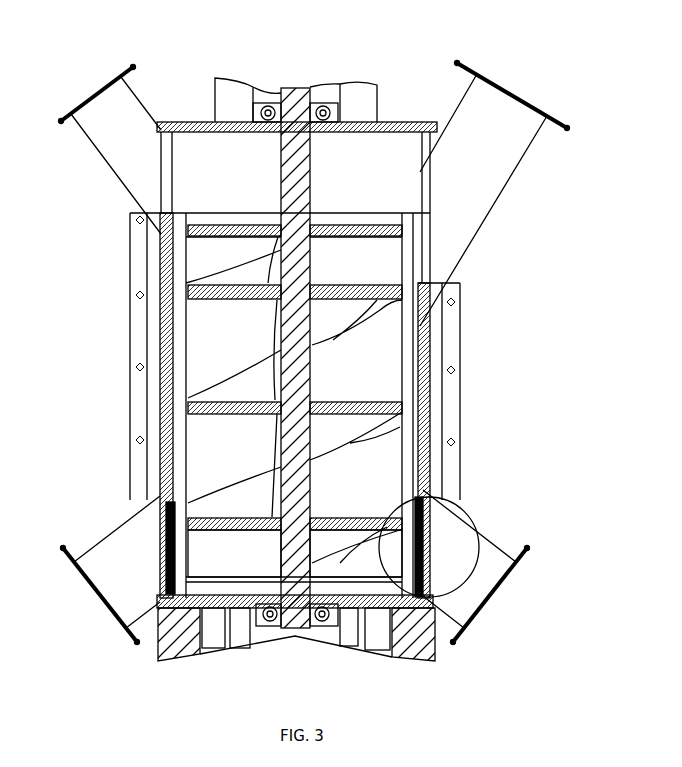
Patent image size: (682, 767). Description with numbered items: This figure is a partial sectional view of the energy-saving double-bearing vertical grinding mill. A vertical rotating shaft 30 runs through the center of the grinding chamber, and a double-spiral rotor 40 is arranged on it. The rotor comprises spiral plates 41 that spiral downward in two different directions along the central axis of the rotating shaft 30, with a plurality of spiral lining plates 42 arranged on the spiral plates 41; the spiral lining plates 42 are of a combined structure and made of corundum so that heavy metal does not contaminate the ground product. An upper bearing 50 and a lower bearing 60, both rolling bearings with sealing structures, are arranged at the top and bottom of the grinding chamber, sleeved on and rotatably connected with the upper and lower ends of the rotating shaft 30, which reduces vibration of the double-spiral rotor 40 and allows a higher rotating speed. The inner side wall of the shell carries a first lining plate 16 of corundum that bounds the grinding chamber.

The first lining plate 16 is at (430, 458).
The rotating shaft 30 is at (402, 370).
The double-spiral rotor 40 is at (227, 363).
The spiral plate 41 is at (186, 412).
The spiral lining plate 42 is at (382, 305).
The upper bearing 50 is at (325, 104).
The lower bearing 60 is at (325, 624).